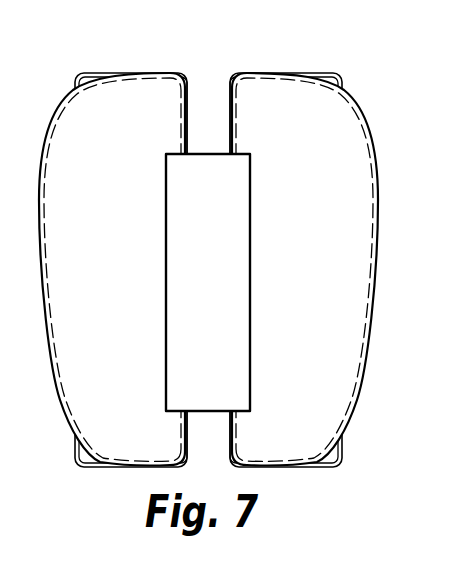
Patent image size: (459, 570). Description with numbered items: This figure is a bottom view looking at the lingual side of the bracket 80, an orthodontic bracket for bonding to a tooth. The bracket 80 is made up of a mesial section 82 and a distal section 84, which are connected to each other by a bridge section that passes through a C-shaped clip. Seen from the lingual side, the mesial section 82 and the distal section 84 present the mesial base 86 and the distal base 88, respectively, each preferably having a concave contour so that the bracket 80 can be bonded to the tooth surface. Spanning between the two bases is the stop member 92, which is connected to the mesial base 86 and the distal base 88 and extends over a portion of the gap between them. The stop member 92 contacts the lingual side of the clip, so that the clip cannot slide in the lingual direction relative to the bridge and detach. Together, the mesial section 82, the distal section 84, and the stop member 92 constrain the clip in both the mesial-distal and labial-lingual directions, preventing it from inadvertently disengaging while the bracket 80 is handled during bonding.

The bracket 80 is at (276, 46).
The mesial section 82 is at (300, 467).
The distal section 84 is at (112, 467).
The mesial base 86 is at (340, 397).
The distal base 88 is at (73, 393).
The stop member 92 is at (205, 172).